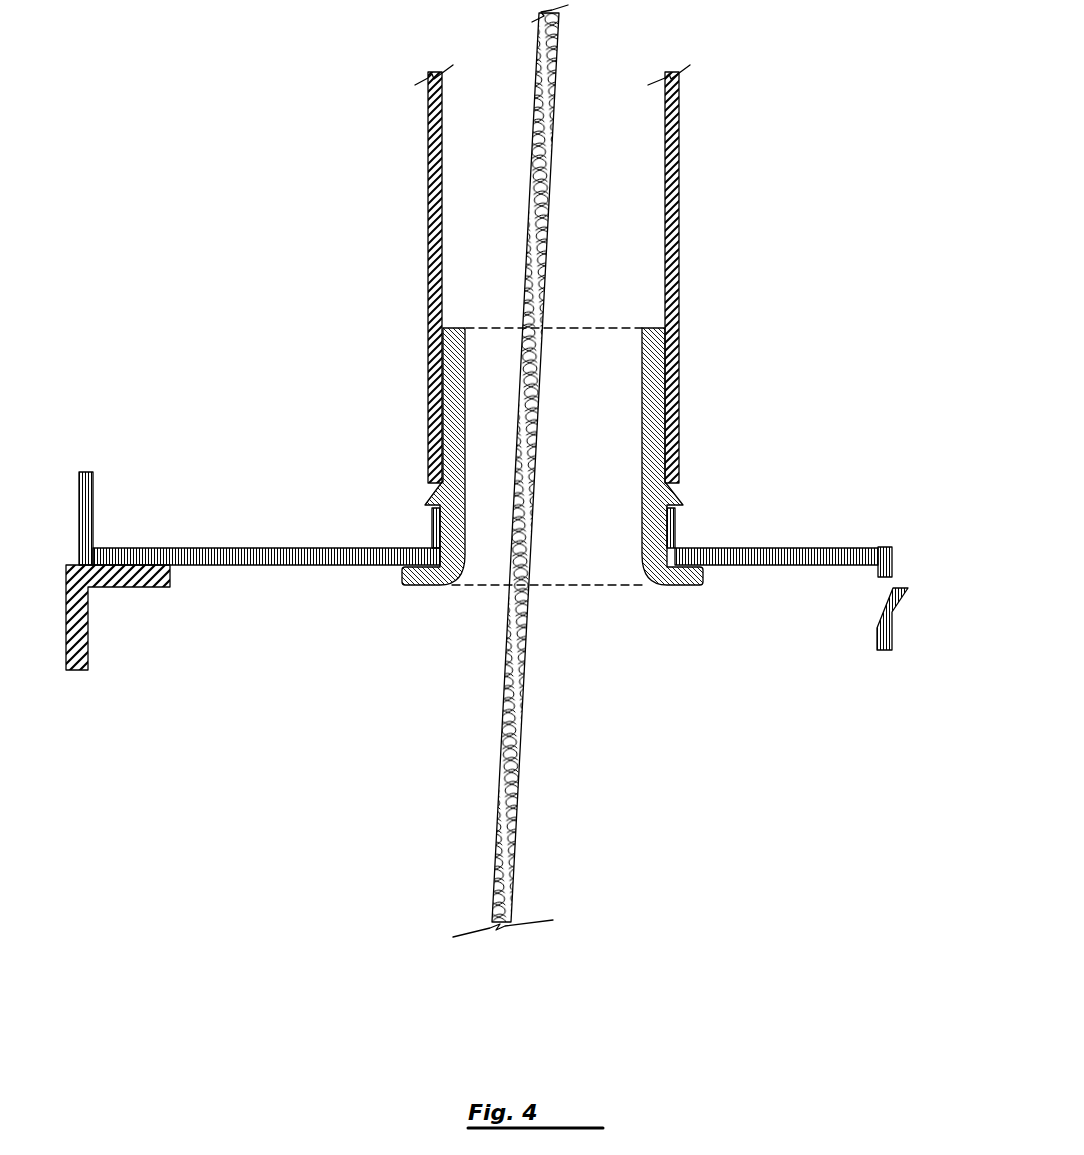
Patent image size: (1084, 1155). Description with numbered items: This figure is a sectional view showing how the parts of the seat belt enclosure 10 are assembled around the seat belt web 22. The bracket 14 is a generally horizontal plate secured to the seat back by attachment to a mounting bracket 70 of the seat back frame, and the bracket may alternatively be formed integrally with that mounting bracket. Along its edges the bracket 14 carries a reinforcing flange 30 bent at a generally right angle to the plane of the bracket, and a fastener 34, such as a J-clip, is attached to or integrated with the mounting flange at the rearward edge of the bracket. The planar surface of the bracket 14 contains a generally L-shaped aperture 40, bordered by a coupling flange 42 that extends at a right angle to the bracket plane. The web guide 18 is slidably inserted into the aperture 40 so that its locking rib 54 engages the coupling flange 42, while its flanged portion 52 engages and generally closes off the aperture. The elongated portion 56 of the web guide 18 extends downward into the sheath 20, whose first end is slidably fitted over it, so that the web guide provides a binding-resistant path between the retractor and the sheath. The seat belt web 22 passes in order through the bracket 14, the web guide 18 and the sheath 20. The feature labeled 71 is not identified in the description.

The seat belt enclosure 10 is at (224, 245).
The bracket 14 is at (840, 547).
The web guide 18 is at (642, 540).
The sheath 20 is at (427, 357).
The seat belt web 22 is at (557, 45).
The reinforcing flange 30 is at (94, 483).
The fastener 34 is at (898, 608).
The L-shaped aperture 40 is at (396, 570).
The coupling flange 42 is at (431, 530).
The flanged portion 52 is at (427, 586).
The locking rib 54 is at (677, 495).
The elongated portion 56 is at (638, 353).
The mounting bracket 70 is at (89, 643).
The panel end block 71 is at (893, 562).